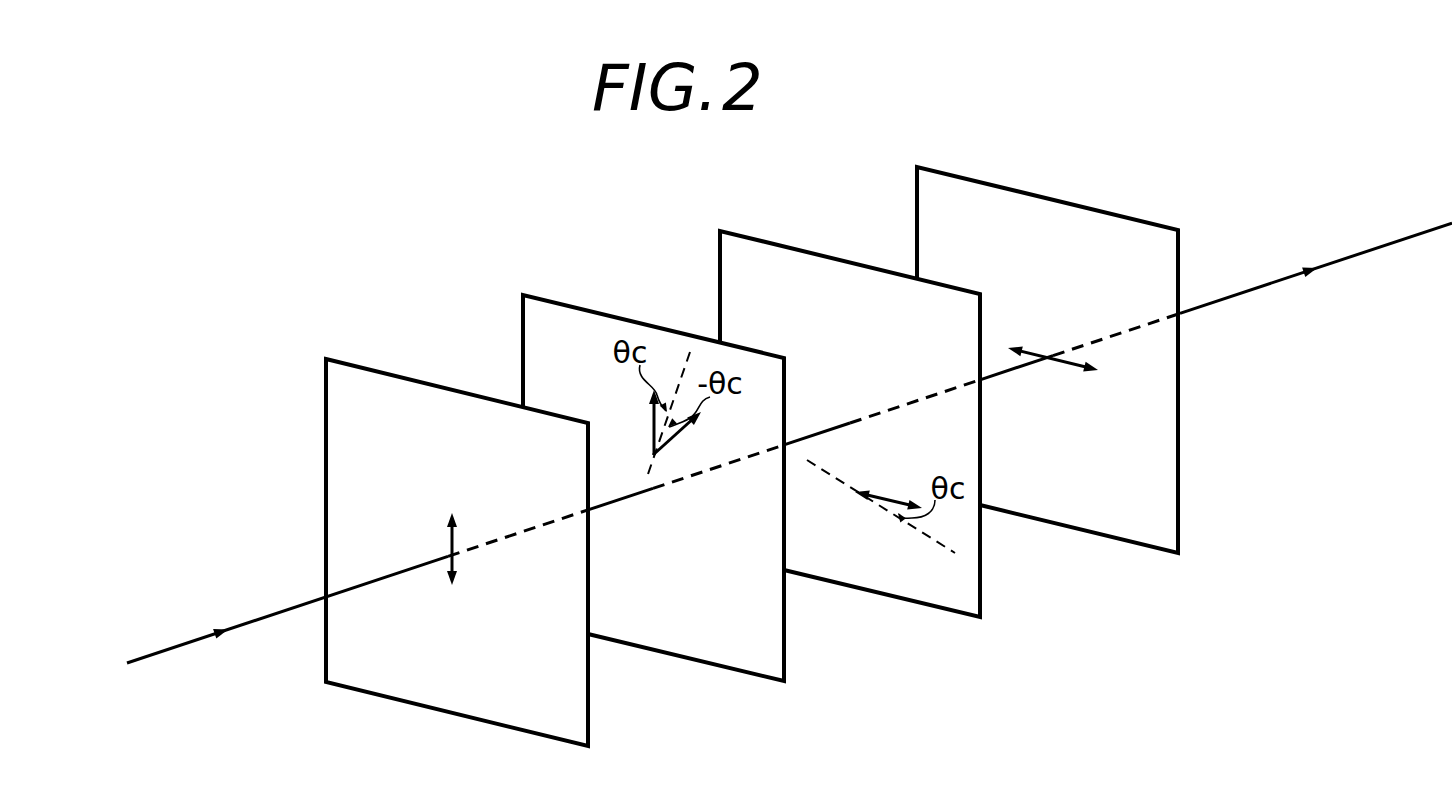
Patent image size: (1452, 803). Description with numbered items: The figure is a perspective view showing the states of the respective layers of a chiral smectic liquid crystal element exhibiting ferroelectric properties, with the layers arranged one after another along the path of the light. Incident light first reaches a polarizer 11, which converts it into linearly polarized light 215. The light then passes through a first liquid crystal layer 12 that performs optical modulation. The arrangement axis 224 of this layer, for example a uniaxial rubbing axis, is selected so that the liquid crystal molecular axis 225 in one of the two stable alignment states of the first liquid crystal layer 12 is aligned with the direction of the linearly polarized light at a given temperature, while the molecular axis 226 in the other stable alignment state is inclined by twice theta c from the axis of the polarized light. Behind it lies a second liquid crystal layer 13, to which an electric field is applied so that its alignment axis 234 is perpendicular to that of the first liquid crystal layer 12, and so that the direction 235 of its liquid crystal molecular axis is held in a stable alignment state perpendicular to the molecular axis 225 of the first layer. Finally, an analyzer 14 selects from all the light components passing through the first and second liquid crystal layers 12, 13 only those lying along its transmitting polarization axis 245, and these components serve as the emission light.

The polarizer 11 is at (548, 742).
The first liquid crystal layer 12 is at (752, 677).
The second liquid crystal layer 13 is at (930, 608).
The analyzer 14 is at (1135, 545).
The linearly polarized light 215 is at (460, 540).
The arrangement axis 224 is at (683, 352).
The liquid crystal molecular axis 225 is at (651, 427).
The molecular axis 226 is at (677, 437).
The alignment axis 234 is at (923, 538).
The direction of the liquid crystal molecular axis 235 is at (887, 497).
The transmitting polarization axis 245 is at (1066, 366).